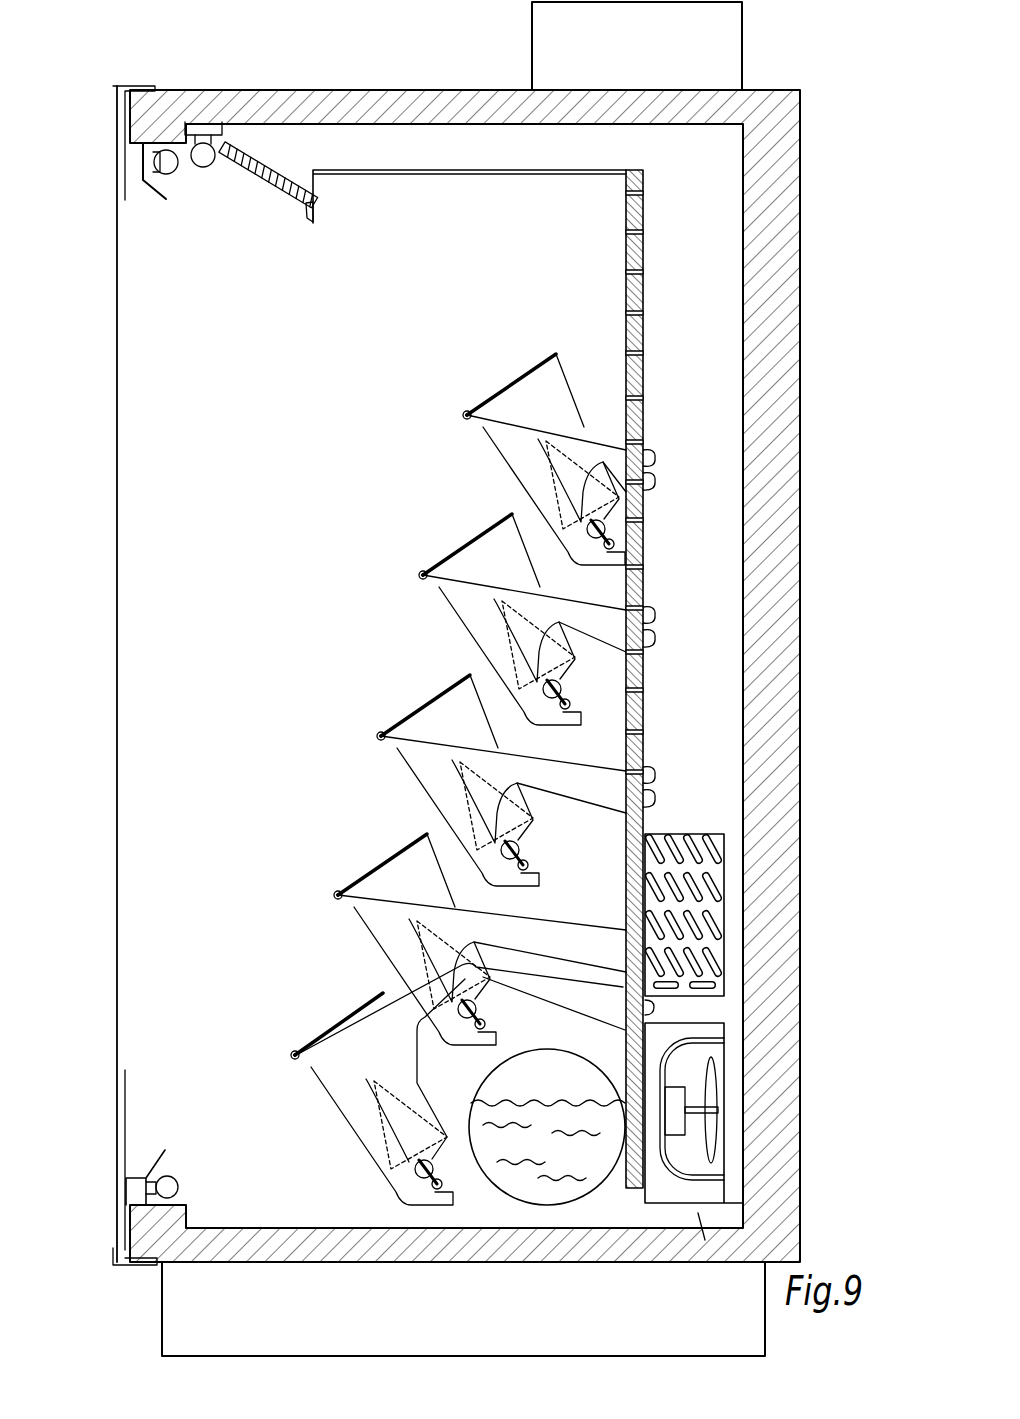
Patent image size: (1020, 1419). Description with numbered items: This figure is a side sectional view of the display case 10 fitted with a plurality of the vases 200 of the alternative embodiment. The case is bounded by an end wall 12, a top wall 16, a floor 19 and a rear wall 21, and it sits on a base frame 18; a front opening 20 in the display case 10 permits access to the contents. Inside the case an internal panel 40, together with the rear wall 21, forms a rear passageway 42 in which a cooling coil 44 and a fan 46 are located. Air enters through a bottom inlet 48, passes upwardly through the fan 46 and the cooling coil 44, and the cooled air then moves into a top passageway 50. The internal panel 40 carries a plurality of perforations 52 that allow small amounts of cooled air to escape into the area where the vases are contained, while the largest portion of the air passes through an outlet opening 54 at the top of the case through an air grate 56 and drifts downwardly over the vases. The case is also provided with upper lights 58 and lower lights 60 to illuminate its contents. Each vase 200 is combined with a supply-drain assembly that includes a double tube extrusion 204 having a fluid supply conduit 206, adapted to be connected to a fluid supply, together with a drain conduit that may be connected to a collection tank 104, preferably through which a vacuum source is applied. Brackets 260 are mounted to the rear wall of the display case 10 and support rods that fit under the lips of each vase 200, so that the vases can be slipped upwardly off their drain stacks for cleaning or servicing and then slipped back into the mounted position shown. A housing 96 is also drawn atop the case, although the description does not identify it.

The display case 10 is at (122, 72).
The end wall 12 is at (228, 621).
The top wall 16 is at (312, 90).
The base frame 18 is at (160, 1308).
The floor 19 is at (296, 1227).
The front opening 20 is at (158, 560).
The rear wall 21 is at (800, 298).
The internal panel 40 is at (626, 884).
The rear passageway 42 is at (710, 657).
The cooling coil 44 is at (725, 882).
The fan 46 is at (715, 1075).
The bottom inlet 48 is at (700, 1240).
The top passageway 50 is at (473, 155).
The perforations 52 is at (631, 193).
The outlet opening 54 is at (273, 150).
The air grate 56 is at (292, 200).
The upper lights 58 is at (207, 168).
The lower lights 60 is at (172, 1131).
The control housing 96 is at (533, 30).
The collection tank 104 is at (497, 1080).
The vase 200 is at (500, 385).
The double tube extrusion 204 is at (588, 532).
The fluid supply conduit 206 is at (603, 546).
The brackets 260 is at (522, 433).